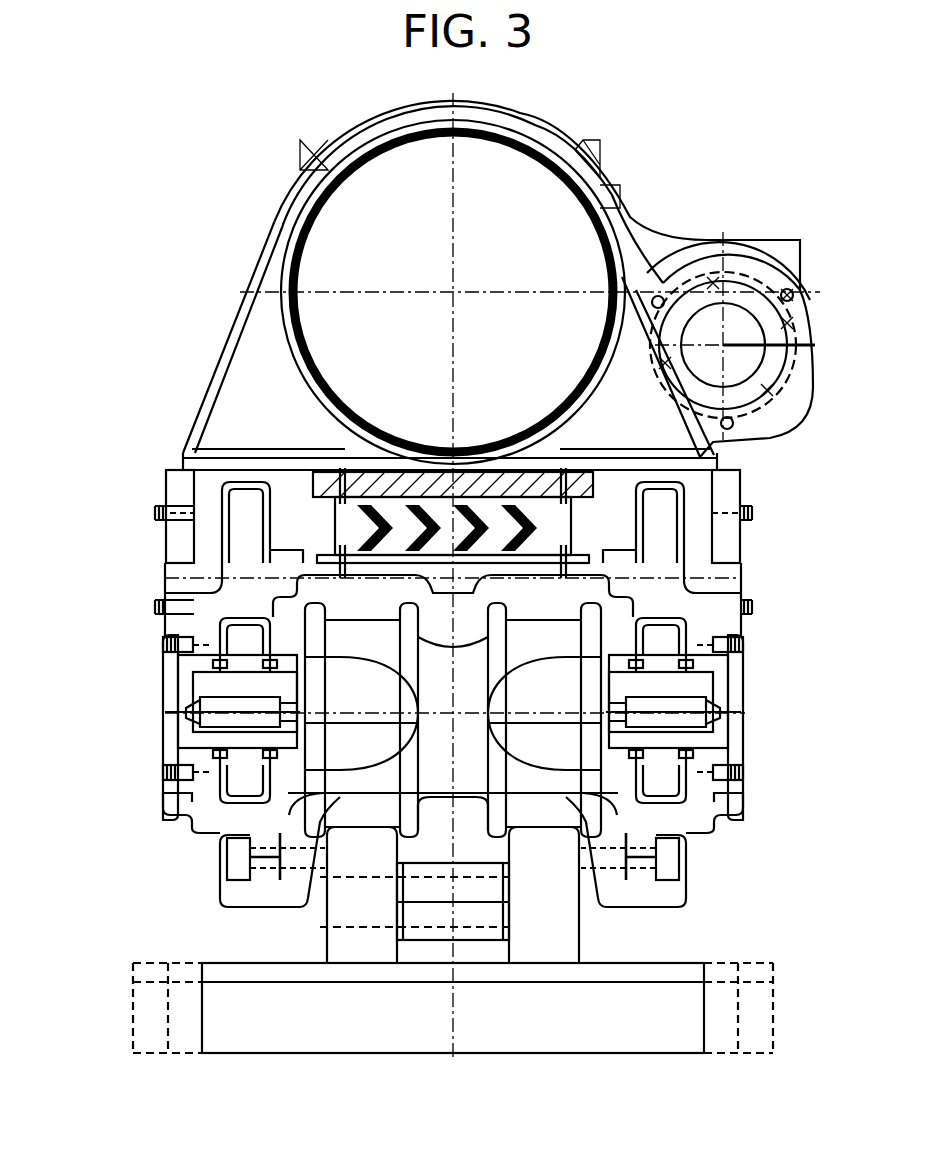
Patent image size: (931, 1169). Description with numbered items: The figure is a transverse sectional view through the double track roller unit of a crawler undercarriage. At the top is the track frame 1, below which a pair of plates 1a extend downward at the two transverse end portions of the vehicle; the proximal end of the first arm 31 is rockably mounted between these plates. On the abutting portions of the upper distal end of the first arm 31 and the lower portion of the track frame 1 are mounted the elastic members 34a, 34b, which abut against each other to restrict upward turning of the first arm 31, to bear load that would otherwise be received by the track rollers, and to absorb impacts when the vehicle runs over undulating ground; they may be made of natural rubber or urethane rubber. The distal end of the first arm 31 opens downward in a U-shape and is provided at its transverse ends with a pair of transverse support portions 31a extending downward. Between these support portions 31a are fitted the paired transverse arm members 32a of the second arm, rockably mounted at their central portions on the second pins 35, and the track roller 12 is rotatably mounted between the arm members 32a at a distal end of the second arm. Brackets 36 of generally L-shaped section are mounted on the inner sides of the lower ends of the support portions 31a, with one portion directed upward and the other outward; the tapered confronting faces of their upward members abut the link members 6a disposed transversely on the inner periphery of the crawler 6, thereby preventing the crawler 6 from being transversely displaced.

The track frame 1 is at (288, 193).
The plate 1a is at (183, 548).
The crawler 6 is at (210, 965).
The link member 6a is at (330, 943).
The track roller 12 is at (345, 627).
The first arm 31 is at (250, 600).
The transverse support portion 31a is at (230, 815).
The transverse arm member 32a is at (230, 653).
The elastic member 34a is at (347, 544).
The elastic member 34b is at (347, 520).
The second pin 35 is at (200, 740).
The bracket 36 is at (230, 898).